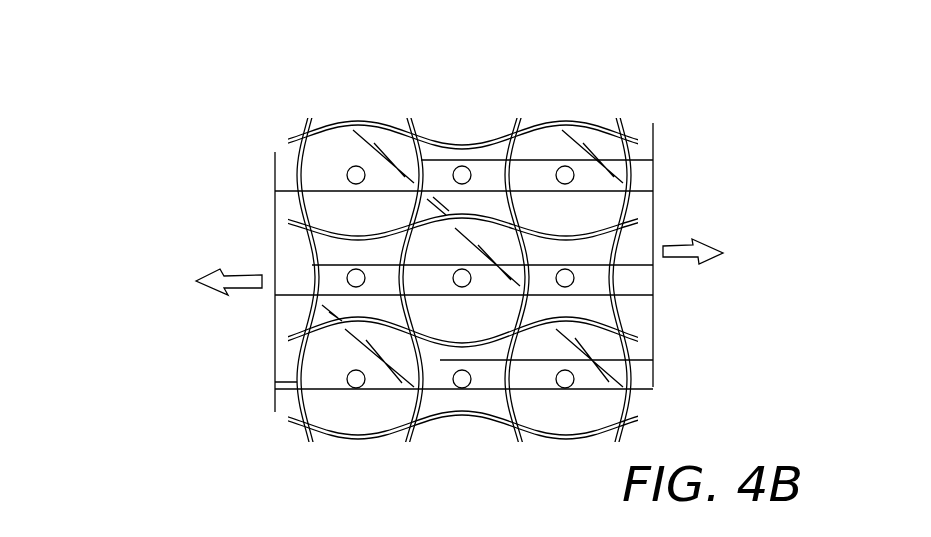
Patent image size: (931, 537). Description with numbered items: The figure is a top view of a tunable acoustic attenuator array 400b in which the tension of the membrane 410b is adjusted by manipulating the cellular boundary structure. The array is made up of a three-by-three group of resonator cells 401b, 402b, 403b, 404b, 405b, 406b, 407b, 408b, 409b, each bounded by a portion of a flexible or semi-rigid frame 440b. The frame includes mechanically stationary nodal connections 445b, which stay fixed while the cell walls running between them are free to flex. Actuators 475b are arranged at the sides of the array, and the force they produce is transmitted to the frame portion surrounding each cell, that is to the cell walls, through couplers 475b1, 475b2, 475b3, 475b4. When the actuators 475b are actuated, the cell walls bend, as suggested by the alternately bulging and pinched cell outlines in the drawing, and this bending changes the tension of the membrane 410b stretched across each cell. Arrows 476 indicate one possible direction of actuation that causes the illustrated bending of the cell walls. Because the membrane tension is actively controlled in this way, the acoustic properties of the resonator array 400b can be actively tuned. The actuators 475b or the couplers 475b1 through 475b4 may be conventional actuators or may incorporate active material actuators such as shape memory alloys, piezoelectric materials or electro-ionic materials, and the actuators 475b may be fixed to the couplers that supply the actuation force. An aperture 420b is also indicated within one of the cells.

The tunable acoustic attenuator array 400b is at (250, 120).
The mechanically stationary nodal connection 445b is at (296, 120).
The membrane 410b is at (352, 146).
The resonator cell 402b is at (480, 142).
The flexible or semi-rigid frame 440b is at (604, 118).
The actuator 475b is at (655, 148).
The coupler 475b1 is at (288, 186).
The coupler 475b2 is at (432, 190).
The coupler 475b3 is at (541, 163).
The coupler 475b4 is at (643, 153).
The aperture 420b is at (567, 181).
The resonator cell 401b is at (300, 203).
The resonator cell 403b is at (614, 208).
The resonator cell 404b is at (310, 307).
The resonator cell 405b is at (411, 256).
The resonator cell 406b is at (611, 308).
The resonator cell 407b is at (306, 402).
The resonator cell 408b is at (423, 377).
The resonator cell 409b is at (618, 405).
The arrows 476 is at (218, 272).